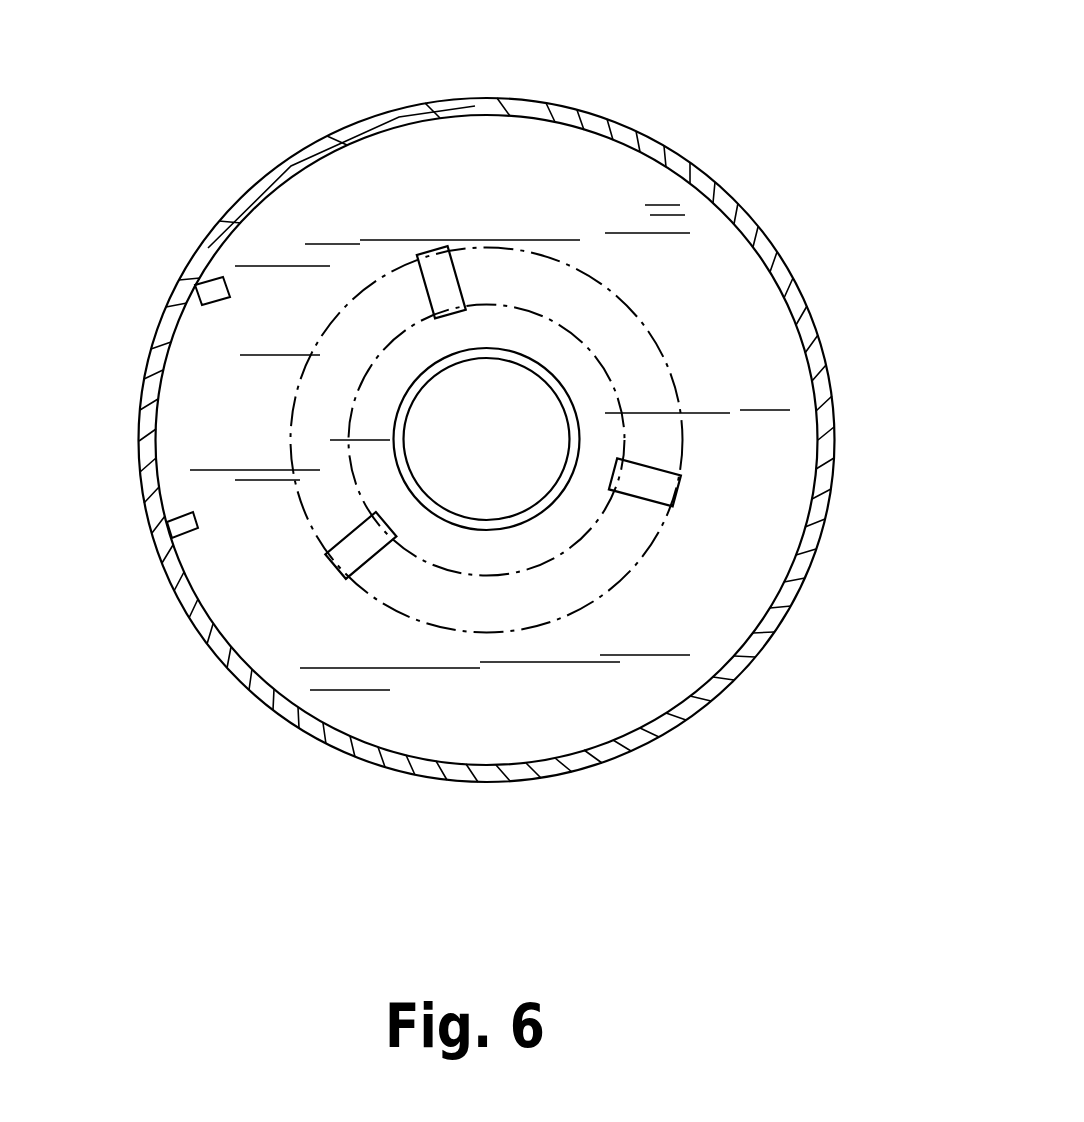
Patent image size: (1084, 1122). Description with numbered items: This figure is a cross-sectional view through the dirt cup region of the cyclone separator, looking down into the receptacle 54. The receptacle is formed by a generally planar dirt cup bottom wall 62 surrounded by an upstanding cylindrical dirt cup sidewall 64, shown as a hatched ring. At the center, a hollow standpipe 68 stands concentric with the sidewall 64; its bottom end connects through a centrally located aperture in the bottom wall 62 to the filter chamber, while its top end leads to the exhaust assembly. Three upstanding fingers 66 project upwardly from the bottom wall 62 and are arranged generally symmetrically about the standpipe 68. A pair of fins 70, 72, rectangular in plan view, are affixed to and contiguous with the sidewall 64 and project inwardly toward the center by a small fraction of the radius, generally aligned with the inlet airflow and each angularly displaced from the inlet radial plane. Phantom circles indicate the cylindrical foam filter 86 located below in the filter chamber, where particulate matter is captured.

The rotor assembly 54 is at (500, 441).
The dirt cup bottom wall 62 is at (737, 485).
The dirt cup sidewall 64 is at (827, 375).
The fingers 66 is at (458, 250).
The hollow standpipe 68 is at (507, 525).
The fin 70 is at (198, 282).
The fin 72 is at (167, 522).
The foam filter 86 is at (582, 573).